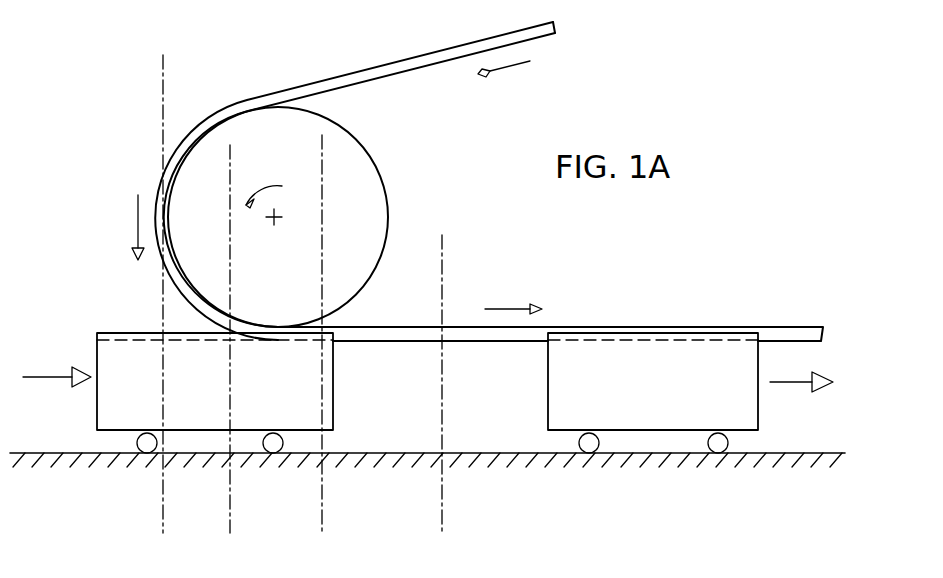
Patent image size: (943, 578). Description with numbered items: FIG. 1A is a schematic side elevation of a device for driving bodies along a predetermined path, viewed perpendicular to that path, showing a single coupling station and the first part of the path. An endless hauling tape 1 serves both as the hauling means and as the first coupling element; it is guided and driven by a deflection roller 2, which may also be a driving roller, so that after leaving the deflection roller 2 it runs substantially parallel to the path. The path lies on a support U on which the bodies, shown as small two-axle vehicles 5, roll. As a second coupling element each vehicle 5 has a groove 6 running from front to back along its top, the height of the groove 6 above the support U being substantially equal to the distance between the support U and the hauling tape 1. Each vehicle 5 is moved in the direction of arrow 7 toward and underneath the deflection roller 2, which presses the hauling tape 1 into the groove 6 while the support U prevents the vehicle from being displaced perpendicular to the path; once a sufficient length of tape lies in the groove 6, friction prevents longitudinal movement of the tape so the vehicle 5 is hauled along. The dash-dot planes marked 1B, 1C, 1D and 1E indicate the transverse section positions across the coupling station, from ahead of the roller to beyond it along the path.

The hauling tape 1 is at (373, 67).
The deflection roller 2 is at (352, 177).
The vehicle 5 is at (203, 390).
The groove 6 is at (128, 332).
The arrow 7 is at (48, 380).
The support U is at (778, 458).
The section plane 1B is at (153, 70).
The section plane 1C is at (220, 154).
The section plane 1D is at (312, 144).
The section plane 1E is at (432, 243).